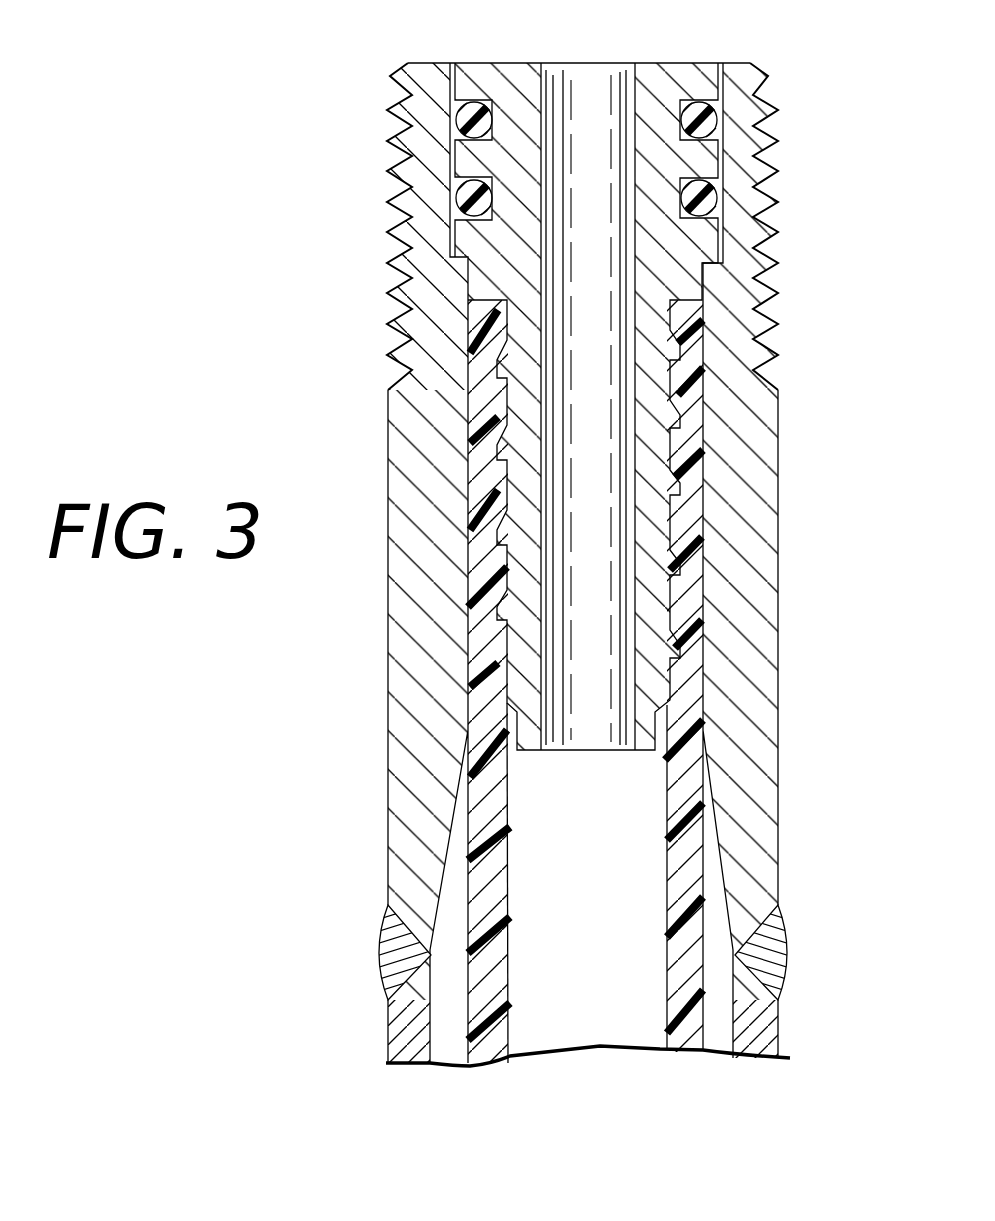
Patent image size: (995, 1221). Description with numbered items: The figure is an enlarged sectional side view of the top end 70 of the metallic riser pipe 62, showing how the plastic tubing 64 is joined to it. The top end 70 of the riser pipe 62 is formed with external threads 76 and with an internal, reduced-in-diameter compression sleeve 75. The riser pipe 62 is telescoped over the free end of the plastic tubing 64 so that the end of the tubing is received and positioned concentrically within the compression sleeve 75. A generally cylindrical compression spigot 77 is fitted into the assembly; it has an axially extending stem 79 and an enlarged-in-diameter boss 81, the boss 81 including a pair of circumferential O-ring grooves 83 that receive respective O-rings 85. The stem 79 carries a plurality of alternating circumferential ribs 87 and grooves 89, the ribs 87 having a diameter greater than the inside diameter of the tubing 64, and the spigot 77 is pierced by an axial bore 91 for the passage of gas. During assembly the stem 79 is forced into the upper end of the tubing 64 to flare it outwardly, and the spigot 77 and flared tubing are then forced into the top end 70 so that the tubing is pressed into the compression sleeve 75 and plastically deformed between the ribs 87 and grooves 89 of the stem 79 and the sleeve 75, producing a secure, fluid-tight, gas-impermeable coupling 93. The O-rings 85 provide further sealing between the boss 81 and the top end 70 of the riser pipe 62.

The riser pipe 62 is at (559, 533).
The plastic tubing 64 is at (708, 870).
The top end 70 is at (594, 531).
The compression sleeve 75 is at (490, 712).
The external threads 76 is at (395, 80).
The compression spigot 77 is at (690, 63).
The stem 79 is at (708, 740).
The boss 81 is at (455, 245).
The O-ring grooves 83 is at (516, 377).
The O-rings 85 is at (455, 170).
The circumferential ribs 87 is at (688, 465).
The grooves 89 is at (490, 440).
The axial bore 91 is at (618, 68).
The coupling 93 is at (705, 505).